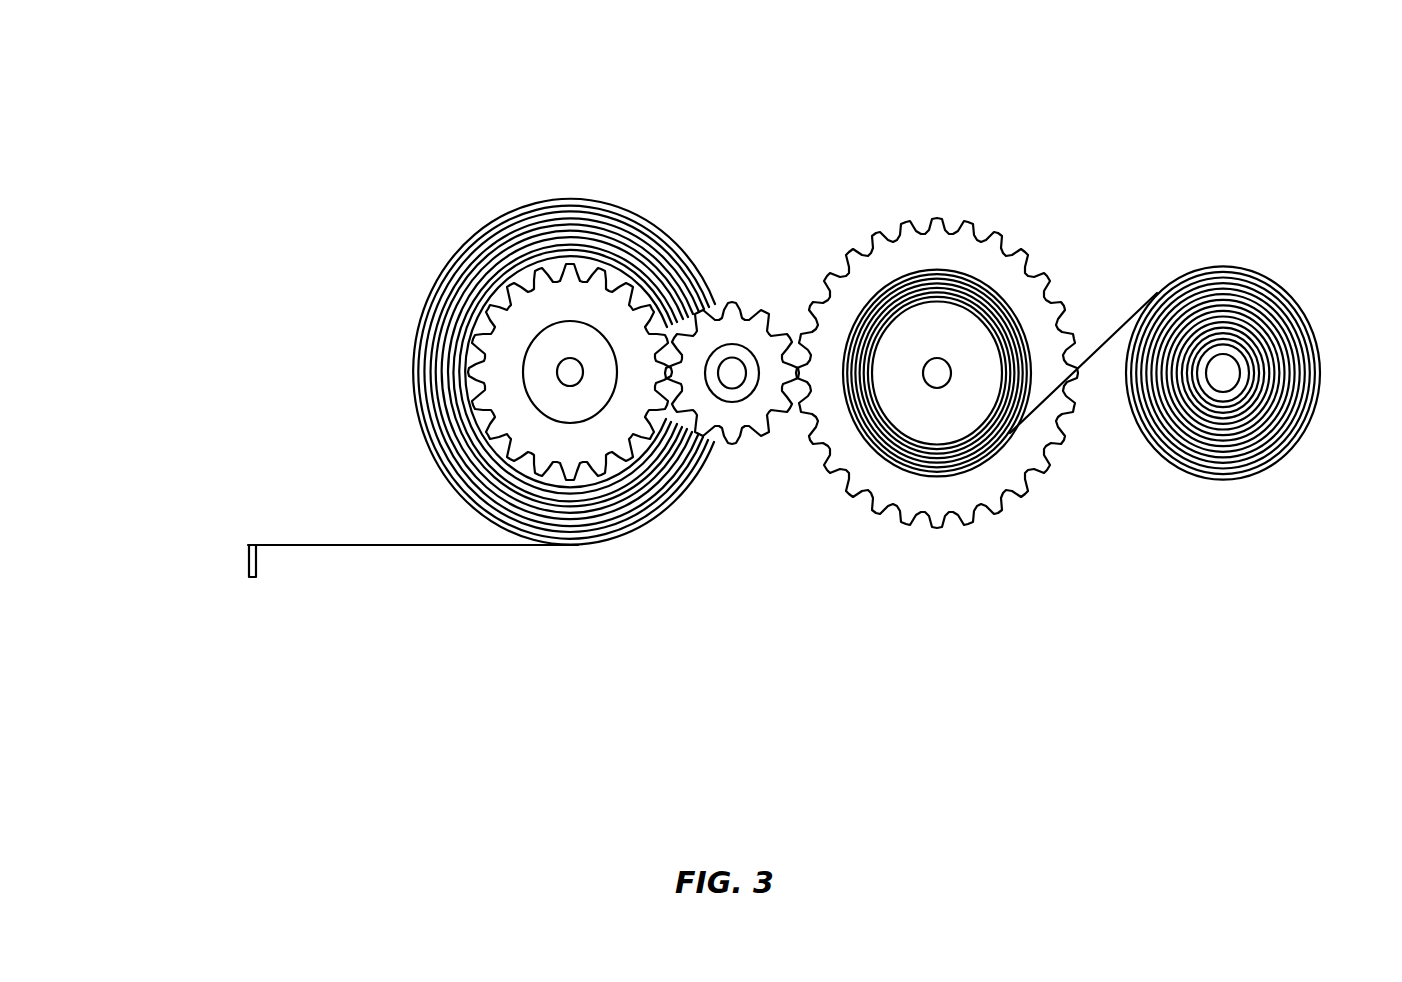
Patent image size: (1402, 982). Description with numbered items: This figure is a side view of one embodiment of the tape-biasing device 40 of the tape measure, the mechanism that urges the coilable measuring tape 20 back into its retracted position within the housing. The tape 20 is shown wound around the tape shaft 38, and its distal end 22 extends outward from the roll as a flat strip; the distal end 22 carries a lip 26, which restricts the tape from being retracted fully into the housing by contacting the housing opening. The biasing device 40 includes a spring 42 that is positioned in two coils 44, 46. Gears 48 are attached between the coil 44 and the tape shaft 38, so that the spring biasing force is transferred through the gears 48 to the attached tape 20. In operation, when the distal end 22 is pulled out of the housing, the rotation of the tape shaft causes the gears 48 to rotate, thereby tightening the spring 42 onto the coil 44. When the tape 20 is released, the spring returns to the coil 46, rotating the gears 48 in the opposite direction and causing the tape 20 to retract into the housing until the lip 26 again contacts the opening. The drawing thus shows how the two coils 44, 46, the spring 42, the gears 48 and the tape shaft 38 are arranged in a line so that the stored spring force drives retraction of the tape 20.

The coilable measuring tape 20 is at (561, 200).
The distal end 22 is at (273, 545).
The lip 26 is at (250, 568).
The tape shaft 38 is at (571, 375).
The tape-biasing device 40 is at (1118, 170).
The spring 42 is at (1093, 358).
The coil 44 is at (920, 447).
The coil 46 is at (1288, 320).
The gears 48 is at (665, 232).